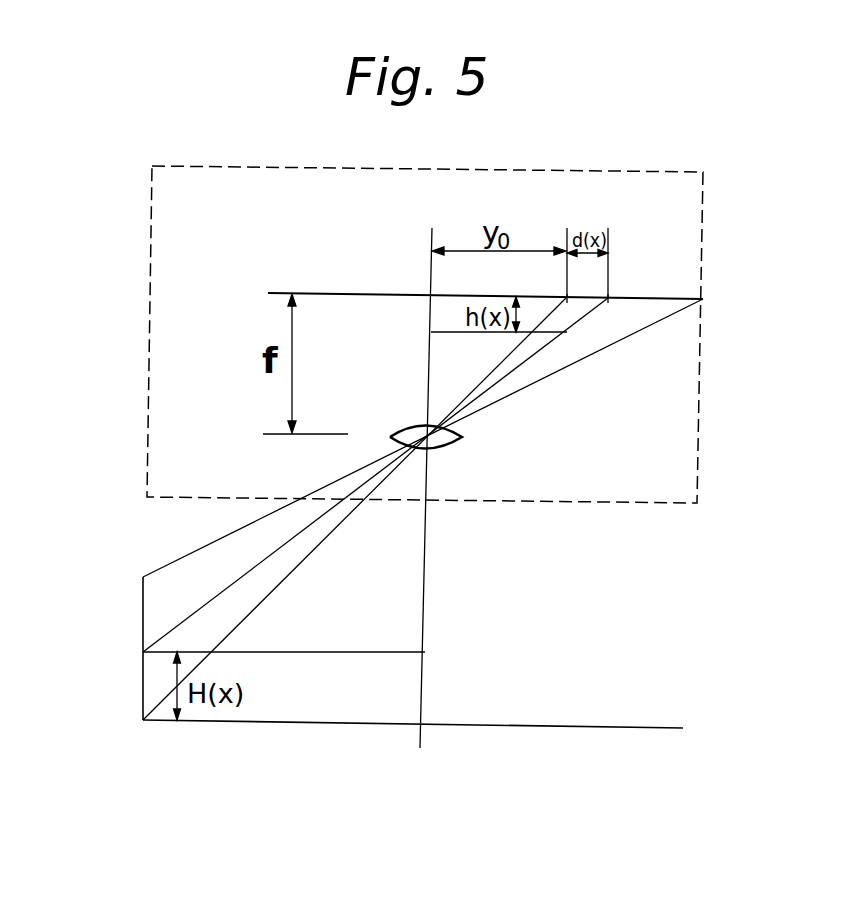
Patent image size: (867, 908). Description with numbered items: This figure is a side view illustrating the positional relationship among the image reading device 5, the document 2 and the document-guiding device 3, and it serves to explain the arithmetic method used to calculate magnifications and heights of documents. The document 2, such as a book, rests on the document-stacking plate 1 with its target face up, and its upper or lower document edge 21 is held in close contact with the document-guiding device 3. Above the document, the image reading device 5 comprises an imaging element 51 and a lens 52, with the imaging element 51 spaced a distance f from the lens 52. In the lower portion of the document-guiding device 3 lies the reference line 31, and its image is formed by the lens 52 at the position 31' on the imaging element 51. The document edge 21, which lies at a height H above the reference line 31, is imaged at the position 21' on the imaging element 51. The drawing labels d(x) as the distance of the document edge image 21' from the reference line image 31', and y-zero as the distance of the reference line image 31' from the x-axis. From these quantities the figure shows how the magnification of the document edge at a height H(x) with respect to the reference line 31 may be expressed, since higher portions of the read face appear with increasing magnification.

The document-stacking plate 1 is at (346, 730).
The document 2 is at (304, 652).
The document-guiding device 3 is at (142, 590).
The document edge 21 is at (331, 475).
The reference line 31 is at (311, 508).
The image reading device 5 is at (553, 170).
The imaging element 51 is at (410, 295).
The lens 52 is at (442, 450).
The position of the document edge image 21' is at (645, 255).
The position of the reference line image 31' is at (610, 353).